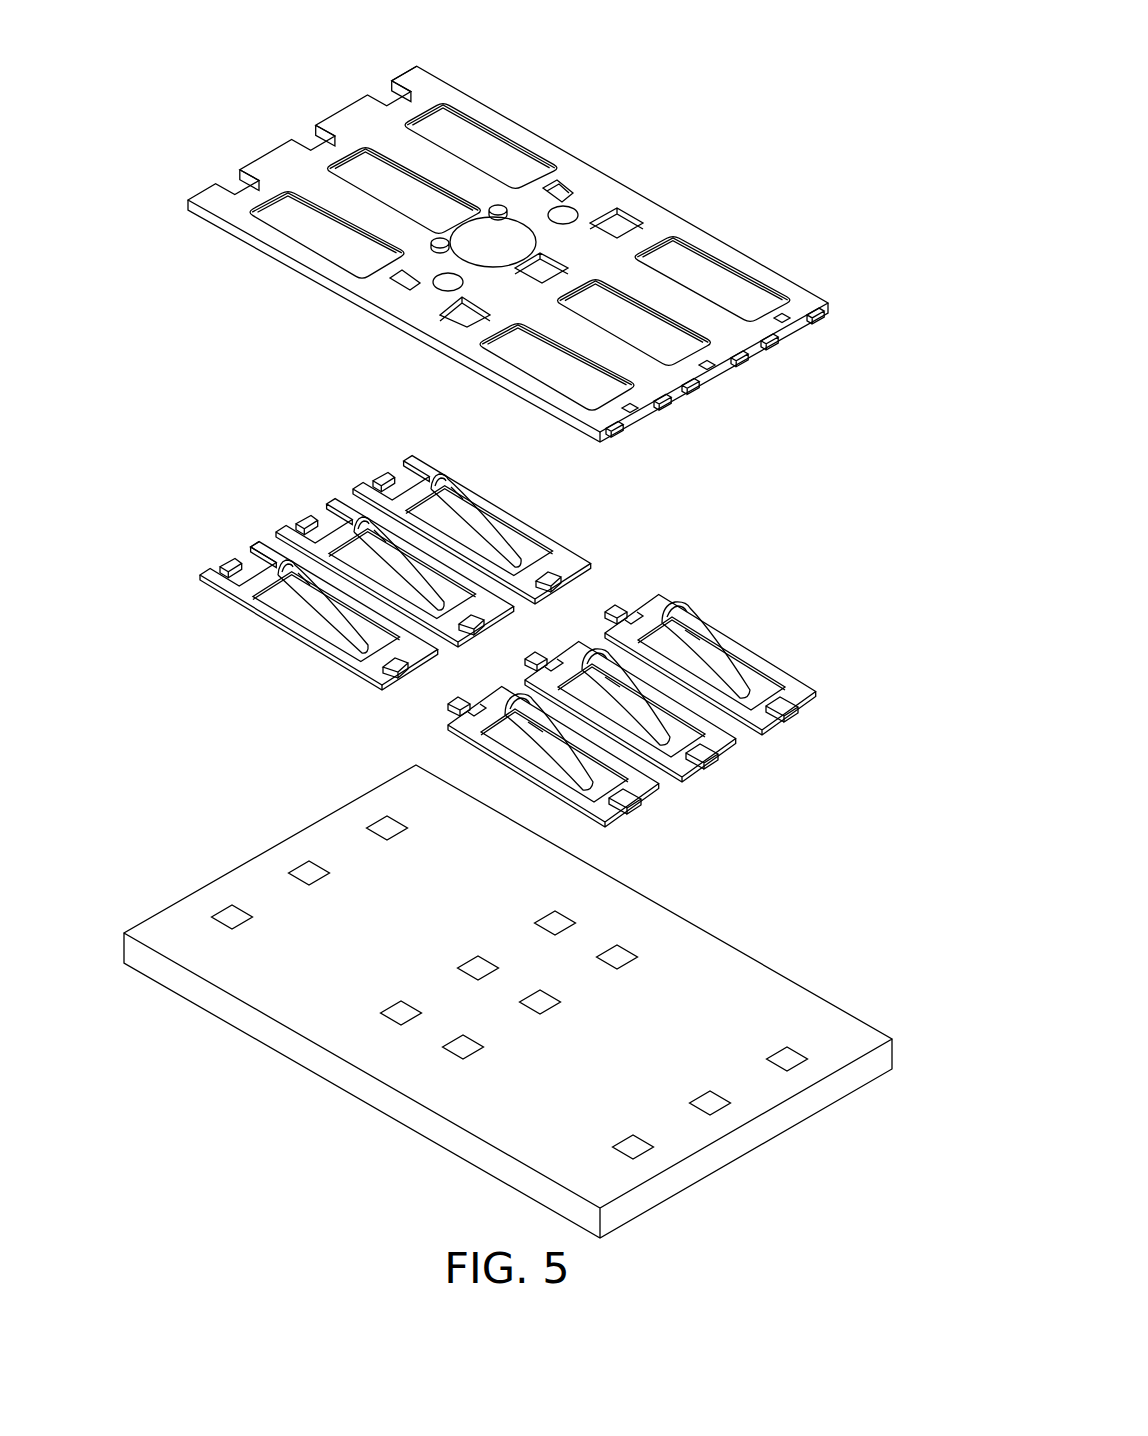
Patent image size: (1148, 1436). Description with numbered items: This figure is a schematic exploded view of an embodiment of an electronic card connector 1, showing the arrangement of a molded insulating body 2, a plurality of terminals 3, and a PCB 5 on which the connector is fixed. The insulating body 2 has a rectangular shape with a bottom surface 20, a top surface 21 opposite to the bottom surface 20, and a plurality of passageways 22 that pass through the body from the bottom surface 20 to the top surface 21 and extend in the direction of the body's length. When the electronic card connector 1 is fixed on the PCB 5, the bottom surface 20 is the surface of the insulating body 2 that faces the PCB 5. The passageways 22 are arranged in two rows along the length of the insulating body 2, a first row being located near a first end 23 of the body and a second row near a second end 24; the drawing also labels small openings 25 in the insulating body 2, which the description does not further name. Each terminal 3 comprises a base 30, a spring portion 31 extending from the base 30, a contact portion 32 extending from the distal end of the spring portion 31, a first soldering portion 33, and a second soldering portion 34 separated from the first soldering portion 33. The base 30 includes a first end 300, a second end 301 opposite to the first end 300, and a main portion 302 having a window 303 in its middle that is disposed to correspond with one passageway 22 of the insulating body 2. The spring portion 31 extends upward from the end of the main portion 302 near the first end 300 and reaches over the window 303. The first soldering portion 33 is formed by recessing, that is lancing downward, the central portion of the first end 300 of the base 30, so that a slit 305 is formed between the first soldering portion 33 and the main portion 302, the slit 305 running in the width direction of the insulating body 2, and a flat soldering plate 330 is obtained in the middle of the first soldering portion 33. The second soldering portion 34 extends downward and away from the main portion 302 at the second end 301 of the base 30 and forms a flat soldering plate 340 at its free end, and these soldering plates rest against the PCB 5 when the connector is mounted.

The electronic card connector 1 is at (146, 590).
The insulating body 2 is at (634, 176).
The bottom surface 20 is at (812, 328).
The top surface 21 is at (754, 268).
The passageway 22 is at (515, 357).
The first end 23 is at (782, 352).
The second end 24 is at (410, 74).
The positioning holes 25 is at (630, 402).
The terminal 3 is at (643, 575).
The base 30 is at (816, 692).
The spring portion 31 is at (740, 672).
The contact portion 32 is at (692, 607).
The first soldering portion 33 is at (798, 722).
The second soldering portion 34 is at (604, 613).
The first end 300 is at (378, 687).
The second end 301 is at (205, 587).
The main portion 302 is at (250, 552).
The window 303 is at (288, 600).
The slit 305 is at (380, 660).
The flat soldering plate 330 is at (400, 679).
The flat soldering plate 340 is at (221, 565).
The PCB 5 is at (838, 1134).